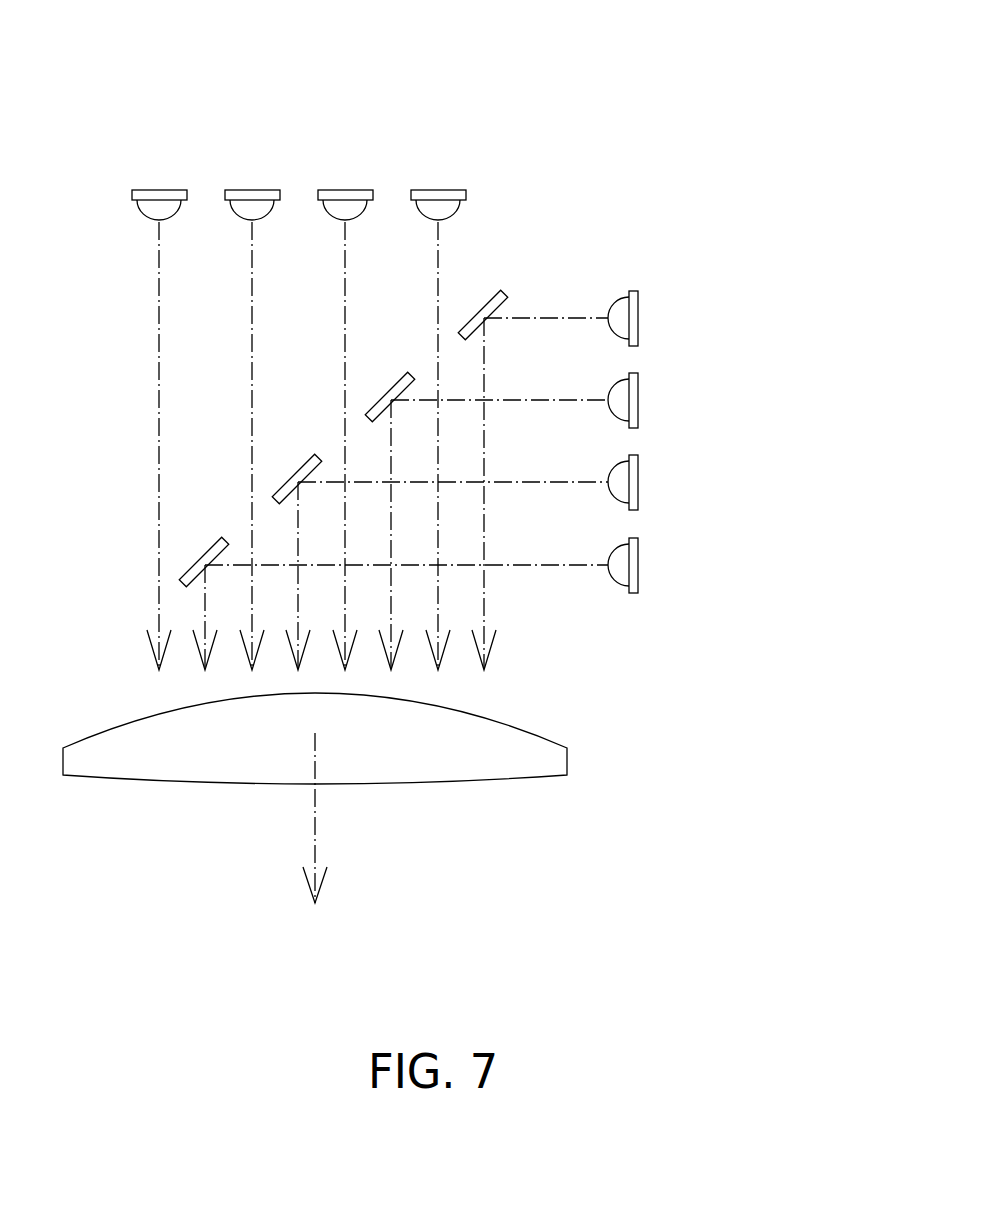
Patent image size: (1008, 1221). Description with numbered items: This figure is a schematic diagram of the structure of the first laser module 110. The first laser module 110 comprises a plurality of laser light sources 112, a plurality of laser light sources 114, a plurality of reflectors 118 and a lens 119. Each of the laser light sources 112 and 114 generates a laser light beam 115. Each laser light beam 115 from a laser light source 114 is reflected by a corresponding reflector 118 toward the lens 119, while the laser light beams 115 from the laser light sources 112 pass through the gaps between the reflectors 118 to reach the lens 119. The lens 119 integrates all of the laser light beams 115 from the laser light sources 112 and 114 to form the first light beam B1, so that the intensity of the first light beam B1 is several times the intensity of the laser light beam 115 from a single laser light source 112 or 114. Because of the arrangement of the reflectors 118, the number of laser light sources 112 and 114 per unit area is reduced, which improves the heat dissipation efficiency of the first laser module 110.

The first laser module 110 is at (656, 92).
The laser light source 112 is at (163, 171).
The laser light source 114 is at (657, 310).
The laser light beam 115 is at (189, 286).
The reflector 118 is at (488, 300).
The lens 119 is at (522, 728).
The first light beam B1 is at (318, 820).